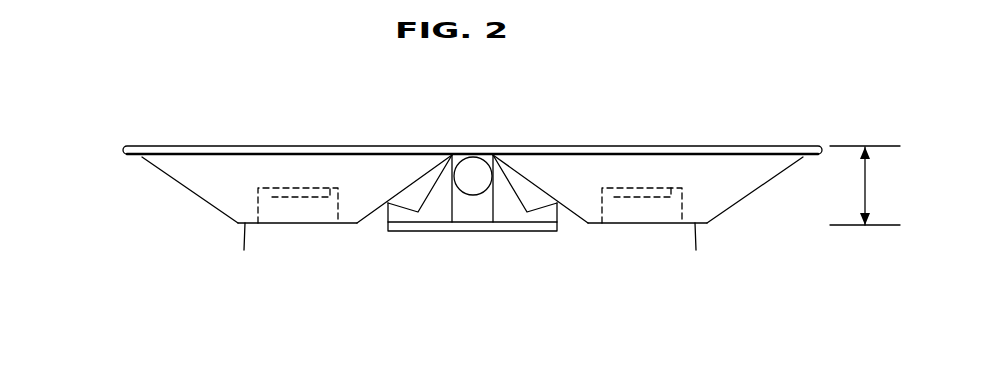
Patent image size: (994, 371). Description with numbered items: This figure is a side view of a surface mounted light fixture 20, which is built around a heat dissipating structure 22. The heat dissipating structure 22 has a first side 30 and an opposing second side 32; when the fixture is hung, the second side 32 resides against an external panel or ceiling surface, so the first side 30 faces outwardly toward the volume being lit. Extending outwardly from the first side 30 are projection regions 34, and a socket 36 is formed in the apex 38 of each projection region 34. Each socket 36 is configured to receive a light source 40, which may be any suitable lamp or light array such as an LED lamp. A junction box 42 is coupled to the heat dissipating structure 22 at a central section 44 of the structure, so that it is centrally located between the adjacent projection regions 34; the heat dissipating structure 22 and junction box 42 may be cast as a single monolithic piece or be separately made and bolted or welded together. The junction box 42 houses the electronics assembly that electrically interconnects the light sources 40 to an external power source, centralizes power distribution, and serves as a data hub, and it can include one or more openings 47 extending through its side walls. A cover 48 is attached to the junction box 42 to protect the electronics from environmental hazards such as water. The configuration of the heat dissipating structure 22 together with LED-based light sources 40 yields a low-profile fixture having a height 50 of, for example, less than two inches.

The surface mounted light fixture 20 is at (896, 329).
The heat dissipating structure 22 is at (143, 153).
The first side 30 is at (155, 252).
The second side 32 is at (155, 88).
The projection region 34 is at (177, 172).
The socket 36 is at (307, 235).
The apex 38 is at (244, 250).
The light source 40 is at (292, 197).
The junction box 42 is at (545, 212).
The central section 44 is at (476, 250).
The opening 47 is at (471, 175).
The cover 48 is at (397, 231).
The height 50 is at (867, 185).